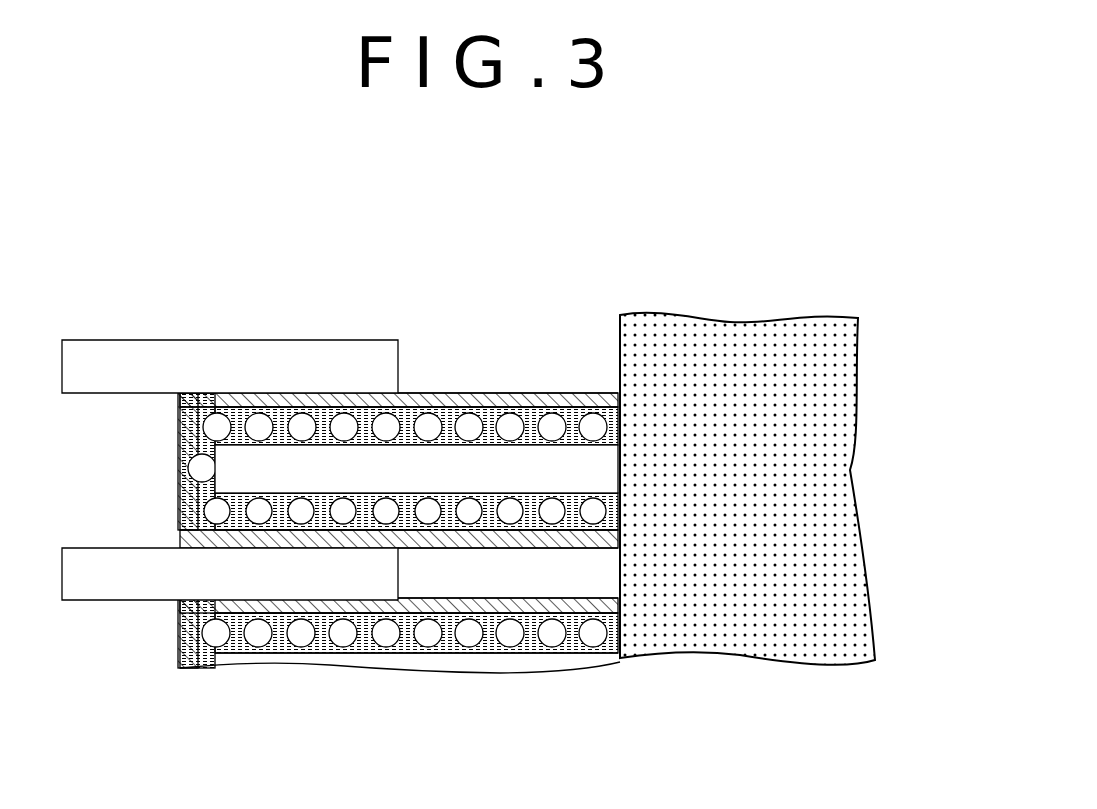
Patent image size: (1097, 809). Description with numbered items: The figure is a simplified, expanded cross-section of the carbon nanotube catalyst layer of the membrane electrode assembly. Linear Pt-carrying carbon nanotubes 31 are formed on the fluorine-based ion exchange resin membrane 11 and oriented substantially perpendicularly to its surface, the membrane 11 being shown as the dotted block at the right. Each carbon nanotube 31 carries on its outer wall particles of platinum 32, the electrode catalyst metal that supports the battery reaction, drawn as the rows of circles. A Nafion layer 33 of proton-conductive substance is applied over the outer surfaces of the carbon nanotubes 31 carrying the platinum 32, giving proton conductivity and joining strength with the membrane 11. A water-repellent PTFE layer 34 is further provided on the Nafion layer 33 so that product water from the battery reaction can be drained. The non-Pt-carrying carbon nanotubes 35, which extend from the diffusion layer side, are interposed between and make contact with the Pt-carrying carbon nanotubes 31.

The fluorine-based ion exchange resin membrane 11 is at (835, 482).
The Pt-carrying carbon nanotube 31 is at (554, 468).
The platinum 32 is at (427, 432).
The Nafion layer 33 is at (490, 410).
The PTFE layer 34 is at (444, 400).
The non-Pt-carrying carbon nanotube 35 is at (110, 353).